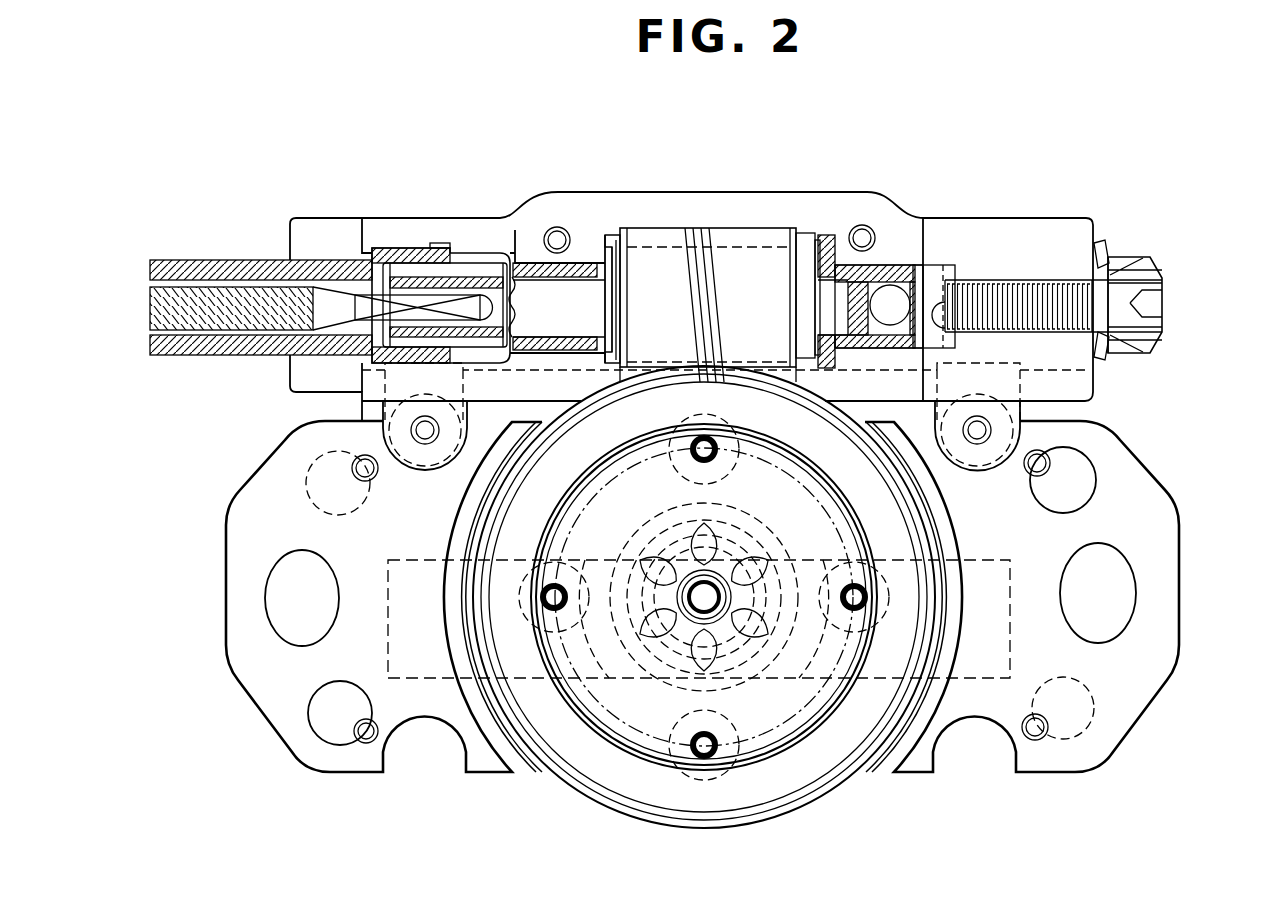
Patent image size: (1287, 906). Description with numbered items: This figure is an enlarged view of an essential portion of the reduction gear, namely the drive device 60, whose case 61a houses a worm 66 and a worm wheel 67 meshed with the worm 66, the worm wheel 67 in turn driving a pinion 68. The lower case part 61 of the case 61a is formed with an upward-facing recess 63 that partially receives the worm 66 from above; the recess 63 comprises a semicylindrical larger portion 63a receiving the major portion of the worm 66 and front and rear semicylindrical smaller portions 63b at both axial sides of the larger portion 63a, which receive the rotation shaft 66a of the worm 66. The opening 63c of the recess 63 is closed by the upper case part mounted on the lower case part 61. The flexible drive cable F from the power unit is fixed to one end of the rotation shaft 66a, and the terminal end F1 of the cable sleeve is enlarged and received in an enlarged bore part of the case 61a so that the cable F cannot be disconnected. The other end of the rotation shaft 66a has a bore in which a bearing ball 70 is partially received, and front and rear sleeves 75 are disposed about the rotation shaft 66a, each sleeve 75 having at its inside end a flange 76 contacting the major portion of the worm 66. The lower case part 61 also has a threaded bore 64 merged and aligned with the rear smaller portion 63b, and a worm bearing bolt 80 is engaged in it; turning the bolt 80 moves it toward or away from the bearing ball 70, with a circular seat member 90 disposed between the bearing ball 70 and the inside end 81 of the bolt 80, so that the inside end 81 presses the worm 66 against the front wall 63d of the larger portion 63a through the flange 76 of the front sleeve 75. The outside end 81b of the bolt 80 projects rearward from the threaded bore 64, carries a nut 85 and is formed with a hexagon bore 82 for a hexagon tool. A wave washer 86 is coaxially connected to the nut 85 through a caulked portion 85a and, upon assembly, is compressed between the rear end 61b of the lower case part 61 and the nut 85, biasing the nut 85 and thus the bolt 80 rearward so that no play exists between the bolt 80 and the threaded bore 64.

The flexible drive cable F is at (232, 256).
The terminal end of the sleeve of the cable F1 is at (410, 238).
The drive device 60 is at (1184, 516).
The lower case part 61 is at (1080, 218).
The case 61a is at (1182, 563).
The rear end of the lower case part 61b is at (1098, 240).
The recess 63 is at (737, 228).
The semicylindrical larger portion 63a is at (806, 233).
The semicylindrical smaller portions 63b is at (600, 266).
The opening of the recess 63c is at (768, 232).
The front wall 63d is at (622, 240).
The threaded bore 64 is at (1015, 282).
The worm 66 is at (675, 250).
The rotation shaft 66a is at (590, 262).
The worm wheel 67 is at (812, 812).
The pinion 68 is at (757, 640).
The bearing ball 70 is at (905, 288).
The sleeves 75 is at (515, 262).
The flange 76 is at (562, 229).
The worm bearing bolt 80 is at (1034, 270).
The inside end of the bolt 81 is at (953, 332).
The outside end of the bolt 81b is at (1160, 338).
The hexagon bore 82 is at (1160, 298).
The nut 85 is at (1125, 262).
The caulked portion of the nut 85a is at (1108, 315).
The wave washer 86 is at (1105, 250).
The circular seat member 90 is at (937, 372).